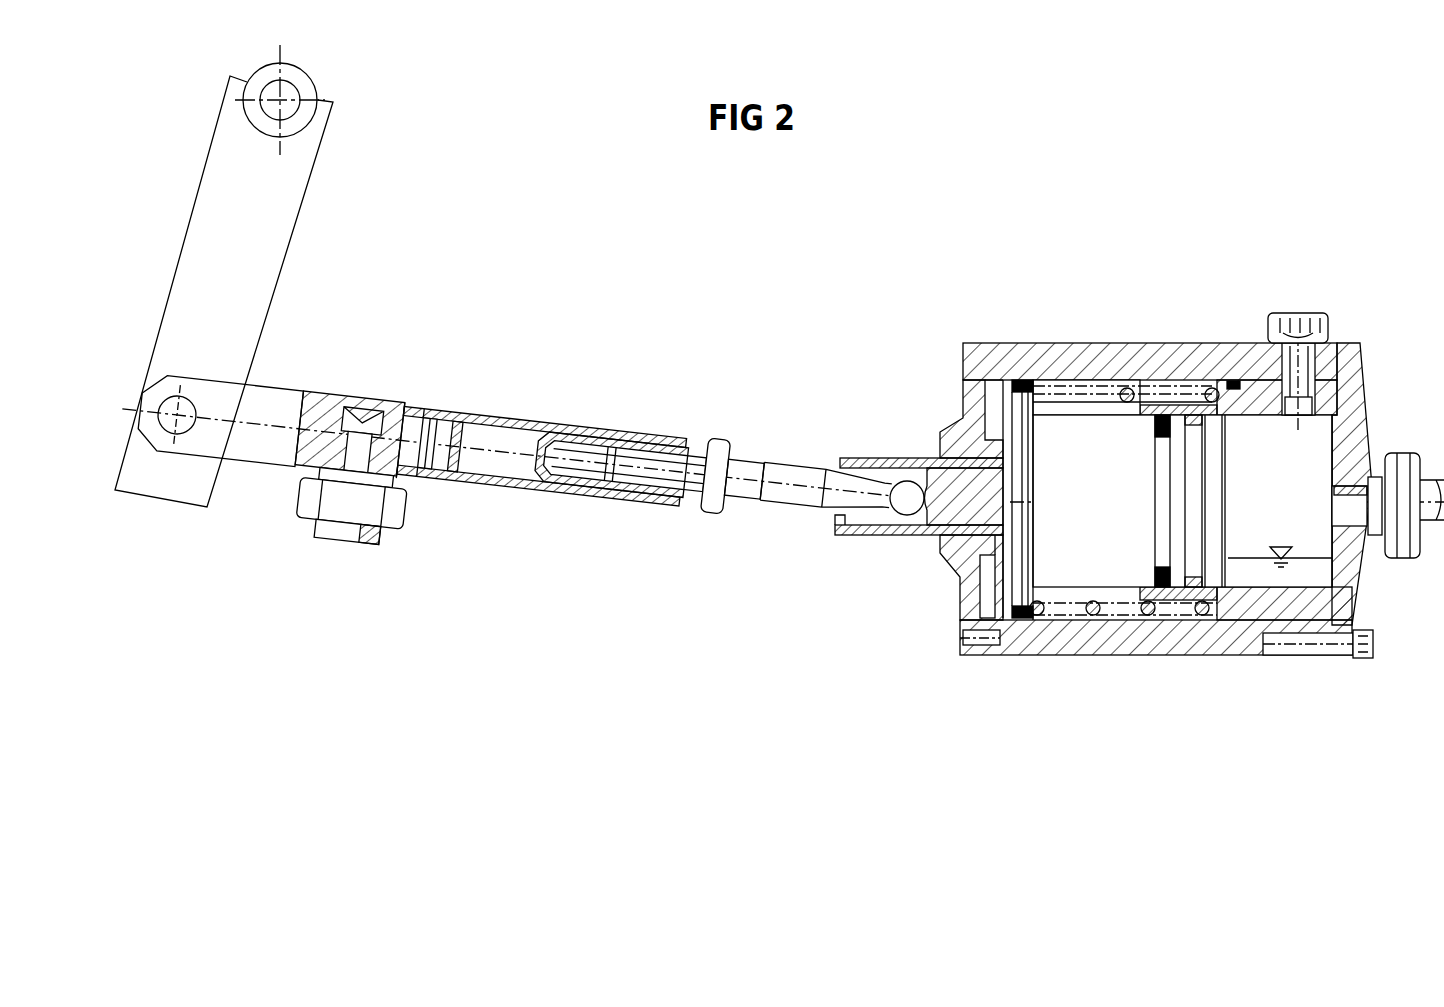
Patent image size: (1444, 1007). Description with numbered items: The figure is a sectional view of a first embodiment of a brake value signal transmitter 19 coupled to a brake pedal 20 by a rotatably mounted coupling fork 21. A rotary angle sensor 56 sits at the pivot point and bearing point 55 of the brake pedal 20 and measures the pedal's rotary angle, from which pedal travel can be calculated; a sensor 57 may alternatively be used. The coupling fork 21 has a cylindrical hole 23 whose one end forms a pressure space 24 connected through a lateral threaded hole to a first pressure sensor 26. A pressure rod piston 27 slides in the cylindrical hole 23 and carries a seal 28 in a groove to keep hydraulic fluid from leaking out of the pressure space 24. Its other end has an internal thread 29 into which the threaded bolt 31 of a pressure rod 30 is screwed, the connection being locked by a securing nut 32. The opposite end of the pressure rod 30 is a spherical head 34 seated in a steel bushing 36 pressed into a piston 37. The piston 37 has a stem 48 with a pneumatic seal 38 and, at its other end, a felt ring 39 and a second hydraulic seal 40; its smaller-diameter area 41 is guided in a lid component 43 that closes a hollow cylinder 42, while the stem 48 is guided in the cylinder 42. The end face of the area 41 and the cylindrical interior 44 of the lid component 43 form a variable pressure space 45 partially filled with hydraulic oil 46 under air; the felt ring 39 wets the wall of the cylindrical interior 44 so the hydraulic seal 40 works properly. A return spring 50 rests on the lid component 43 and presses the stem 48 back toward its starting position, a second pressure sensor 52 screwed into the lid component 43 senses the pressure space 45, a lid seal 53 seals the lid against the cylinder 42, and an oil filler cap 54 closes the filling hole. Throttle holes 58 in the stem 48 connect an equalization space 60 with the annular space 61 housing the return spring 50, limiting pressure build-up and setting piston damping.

The brake value signal transmitter 19 is at (889, 265).
The brake pedal 20 is at (260, 279).
The coupling fork 21 is at (275, 396).
The cylindrical hole 23 is at (407, 398).
The pressure space 24 is at (421, 410).
The first pressure sensor 26 is at (346, 496).
The pressure rod piston 27 is at (433, 470).
The seal 28 is at (452, 470).
The internal thread 29 is at (690, 428).
The pressure rod 30 is at (801, 462).
The threaded bolt 31 is at (694, 487).
The securing nut 32 is at (724, 440).
The spherical head 34 is at (906, 489).
The steel bushing 36 is at (857, 535).
The piston 37 is at (1053, 630).
The pneumatic seal 38 is at (1010, 603).
The felt ring 39 is at (1190, 588).
The second hydraulic seal 40 is at (1148, 620).
The area 41 is at (1097, 557).
The hollow cylinder 42 is at (1068, 358).
The lid component 43 is at (1349, 350).
The cylindrical interior 44 is at (1322, 420).
The variable pressure space 45 is at (1315, 540).
The hydraulic oil 46 is at (1307, 570).
The stem 48 is at (1023, 435).
The return spring 50 is at (1127, 388).
The second pressure sensor 52 is at (1398, 476).
The lid seal 53 is at (1257, 655).
The oil filler cap 54 is at (1275, 312).
The pivot point and bearing point 55 is at (298, 88).
The rotary angle sensor 56 is at (314, 93).
The sensor 57 is at (184, 436).
The throttle holes 58 is at (1015, 380).
The equalization space 60 is at (988, 608).
The annular space 61 is at (1100, 630).